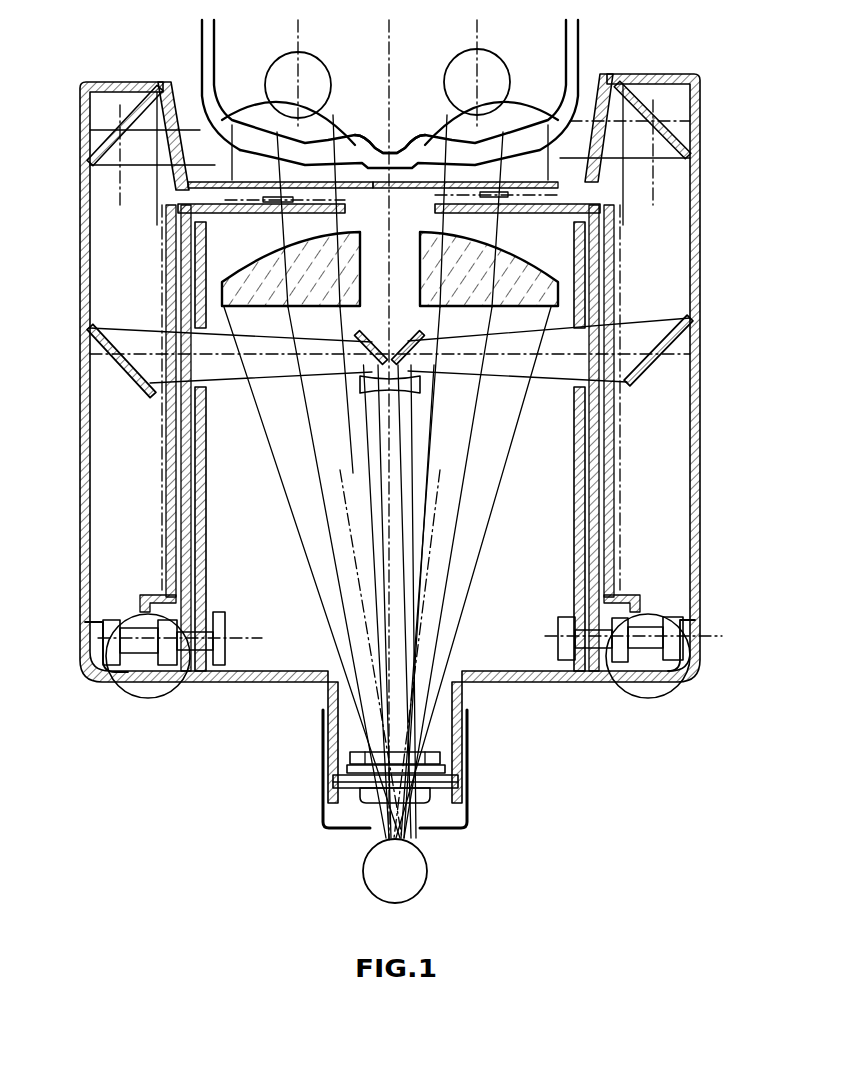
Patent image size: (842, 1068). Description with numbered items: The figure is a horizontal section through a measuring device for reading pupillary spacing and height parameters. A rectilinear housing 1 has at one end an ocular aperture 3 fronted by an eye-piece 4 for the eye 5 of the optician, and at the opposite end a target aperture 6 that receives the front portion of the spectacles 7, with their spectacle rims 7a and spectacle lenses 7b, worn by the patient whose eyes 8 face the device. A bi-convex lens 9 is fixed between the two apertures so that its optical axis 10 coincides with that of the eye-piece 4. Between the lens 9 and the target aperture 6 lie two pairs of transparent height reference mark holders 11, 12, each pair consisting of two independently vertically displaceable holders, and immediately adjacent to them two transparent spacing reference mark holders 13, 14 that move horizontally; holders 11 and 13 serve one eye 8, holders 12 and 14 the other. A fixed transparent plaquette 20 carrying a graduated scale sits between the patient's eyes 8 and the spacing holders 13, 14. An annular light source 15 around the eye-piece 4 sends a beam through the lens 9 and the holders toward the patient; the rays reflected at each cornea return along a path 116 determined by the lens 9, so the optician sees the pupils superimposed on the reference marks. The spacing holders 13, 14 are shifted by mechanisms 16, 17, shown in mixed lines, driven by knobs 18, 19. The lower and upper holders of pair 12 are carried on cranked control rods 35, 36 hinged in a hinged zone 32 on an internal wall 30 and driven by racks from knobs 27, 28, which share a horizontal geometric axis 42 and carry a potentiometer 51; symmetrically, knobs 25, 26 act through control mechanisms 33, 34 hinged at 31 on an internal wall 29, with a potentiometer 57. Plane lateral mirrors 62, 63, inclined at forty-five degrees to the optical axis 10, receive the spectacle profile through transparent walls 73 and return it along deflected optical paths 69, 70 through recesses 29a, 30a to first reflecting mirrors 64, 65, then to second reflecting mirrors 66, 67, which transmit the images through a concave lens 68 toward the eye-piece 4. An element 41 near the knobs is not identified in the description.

The housing 1 is at (707, 440).
The ocular aperture 3 is at (323, 695).
The eye-piece 4 is at (467, 803).
The eye of the optician 5 is at (428, 871).
The target aperture 6 is at (187, 110).
The spectacles 7 is at (591, 54).
The spectacle rims 7a is at (230, 125).
The spectacle lenses 7b is at (250, 125).
The eyes of the patient 8 is at (445, 58).
The lens 9 is at (353, 235).
The optical axis 10 is at (387, 98).
The pair of height reference mark holders 11 is at (251, 213).
The pair of height reference mark holders 12 is at (510, 213).
The spacing reference mark holder 13 is at (273, 178).
The spacing reference mark holder 14 is at (505, 173).
The annular light source 15 is at (443, 757).
The displacement mechanism 16 is at (162, 533).
The displacement mechanism 17 is at (628, 532).
The control knob 18 is at (138, 692).
The control knob 19 is at (643, 690).
The fixed transparent plaquette 20 is at (434, 207).
The control knob 25 is at (103, 677).
The control knob 26 is at (164, 660).
The rotary control knob 27 is at (690, 674).
The rotating control knob 28 is at (643, 690).
The internal wall 29 is at (206, 563).
The recess 29a is at (204, 368).
The internal wall 30 is at (582, 566).
The recess 30a is at (580, 364).
The hinge 31 is at (220, 432).
The hinged zone 32 is at (560, 433).
The control mechanism 33 is at (172, 479).
The control mechanism 34 is at (187, 400).
The cranked control rod 35 is at (613, 562).
The cranked control rod 36 is at (600, 499).
The left adjusting knob 41 is at (103, 643).
The horizontal geometric axis 42 is at (690, 612).
The potentiometer 51 is at (572, 618).
The potentiometer 57 is at (226, 622).
The plane lateral mirror 62 is at (102, 132).
The plane lateral mirror 63 is at (663, 115).
The first reflecting mirror 64 is at (92, 362).
The first reflecting mirror 65 is at (677, 346).
The second reflecting mirror 66 is at (366, 348).
The second reflecting mirror 67 is at (413, 348).
The concave lens 68 is at (421, 388).
The deflected optical path 69 is at (92, 185).
The deflected optical path 70 is at (670, 163).
The transparent wall 73 is at (158, 86).
The return path 116 is at (355, 472).